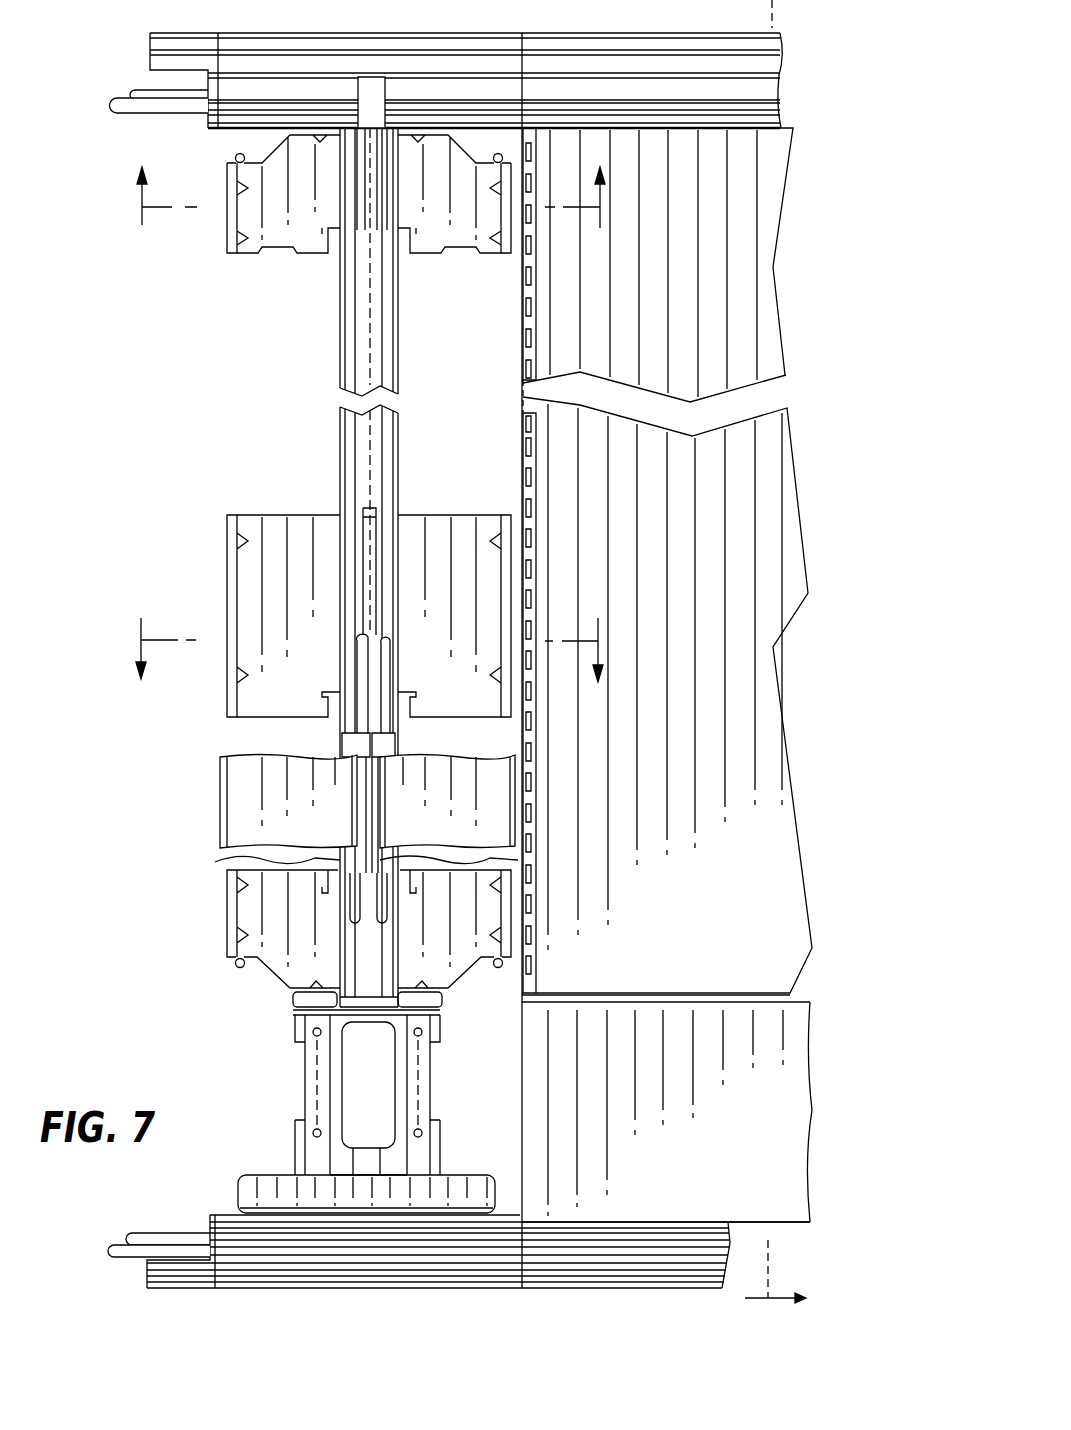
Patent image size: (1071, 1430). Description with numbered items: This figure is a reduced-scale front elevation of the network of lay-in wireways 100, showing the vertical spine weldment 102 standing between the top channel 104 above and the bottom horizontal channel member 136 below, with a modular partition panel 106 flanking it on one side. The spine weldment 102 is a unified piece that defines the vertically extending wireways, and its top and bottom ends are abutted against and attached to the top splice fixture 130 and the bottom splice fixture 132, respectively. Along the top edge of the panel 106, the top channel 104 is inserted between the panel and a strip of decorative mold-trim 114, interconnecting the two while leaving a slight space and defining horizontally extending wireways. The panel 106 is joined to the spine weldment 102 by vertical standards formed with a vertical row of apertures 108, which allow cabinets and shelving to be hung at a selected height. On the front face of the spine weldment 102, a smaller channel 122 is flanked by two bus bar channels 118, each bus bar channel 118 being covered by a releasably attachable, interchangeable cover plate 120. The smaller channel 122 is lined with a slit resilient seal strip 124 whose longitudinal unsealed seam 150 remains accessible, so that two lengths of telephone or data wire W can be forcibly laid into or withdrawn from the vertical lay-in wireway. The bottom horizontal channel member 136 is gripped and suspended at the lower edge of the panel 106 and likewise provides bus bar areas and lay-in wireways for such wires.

The network of lay-in wireways 100 is at (469, 660).
The spine weldment 102 is at (400, 305).
The top channel 104 is at (433, 64).
The panel 106 is at (651, 660).
The apertures 108 is at (523, 443).
The mold-trim 114 is at (150, 47).
The bus bar channels 118 is at (307, 702).
The cover plate 120 is at (236, 833).
The smaller channel 122 is at (360, 475).
The seal strip 124 is at (224, 862).
The top splice fixture 130 is at (503, 32).
The bottom splice fixture 132 is at (260, 1288).
The bottom horizontal channel member 136 is at (717, 1257).
The seam 150 is at (343, 747).
The wire W is at (383, 720).